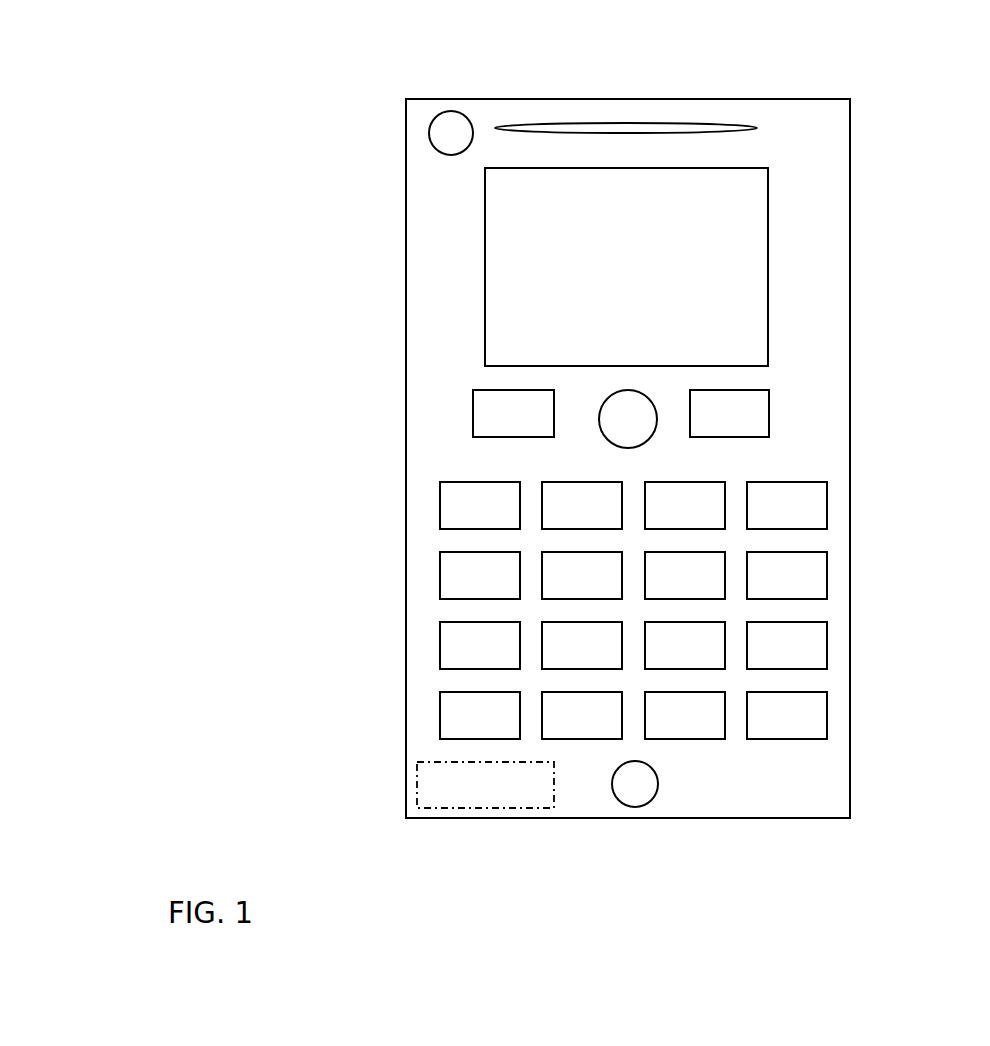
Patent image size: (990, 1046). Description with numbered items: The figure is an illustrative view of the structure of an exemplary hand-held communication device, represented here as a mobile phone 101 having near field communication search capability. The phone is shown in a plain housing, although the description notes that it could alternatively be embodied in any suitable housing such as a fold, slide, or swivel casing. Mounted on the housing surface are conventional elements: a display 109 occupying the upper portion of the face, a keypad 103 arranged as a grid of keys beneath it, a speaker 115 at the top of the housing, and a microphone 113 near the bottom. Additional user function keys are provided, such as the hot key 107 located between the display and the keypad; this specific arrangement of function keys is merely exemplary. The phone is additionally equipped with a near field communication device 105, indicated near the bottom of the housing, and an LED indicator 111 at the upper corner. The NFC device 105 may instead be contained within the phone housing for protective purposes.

The mobile phone 101 is at (319, 523).
The keypad 103 is at (850, 390).
The near field communication (NFC) device 105 is at (485, 785).
The hot key 107 is at (778, 410).
The display 109 is at (626, 267).
The LED indicator 111 is at (463, 100).
The microphone 113 is at (673, 803).
The speaker 115 is at (710, 104).